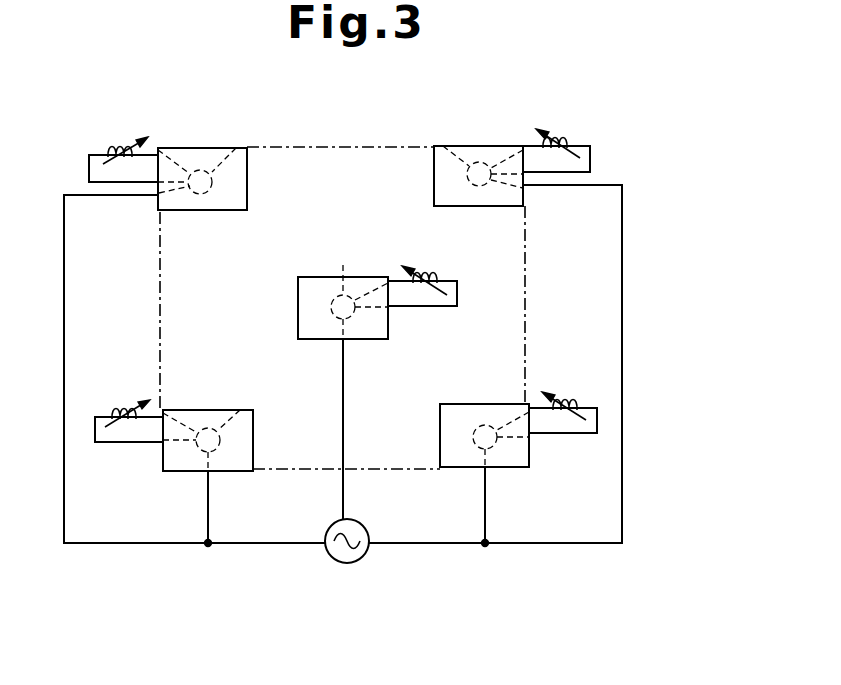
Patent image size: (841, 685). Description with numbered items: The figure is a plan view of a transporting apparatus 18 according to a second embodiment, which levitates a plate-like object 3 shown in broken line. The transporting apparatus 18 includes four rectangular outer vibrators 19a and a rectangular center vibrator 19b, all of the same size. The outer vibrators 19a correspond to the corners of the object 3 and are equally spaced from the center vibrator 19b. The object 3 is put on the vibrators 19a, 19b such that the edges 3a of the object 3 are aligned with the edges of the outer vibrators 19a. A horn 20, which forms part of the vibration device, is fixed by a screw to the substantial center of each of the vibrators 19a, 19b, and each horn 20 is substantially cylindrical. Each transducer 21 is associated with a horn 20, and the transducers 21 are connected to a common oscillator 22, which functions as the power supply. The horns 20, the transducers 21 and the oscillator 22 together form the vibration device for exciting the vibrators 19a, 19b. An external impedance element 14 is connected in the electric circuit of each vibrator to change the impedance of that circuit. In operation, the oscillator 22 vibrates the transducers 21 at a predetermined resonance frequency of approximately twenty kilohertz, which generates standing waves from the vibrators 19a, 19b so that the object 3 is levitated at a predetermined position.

The object 3 is at (354, 270).
The edges 3a is at (340, 146).
The external impedance element 14 is at (114, 150).
The transporting apparatus 18 is at (632, 263).
The outer vibrators 19a is at (176, 212).
The center vibrator 19b is at (298, 300).
The horn 20 is at (236, 148).
The transducer 21 is at (354, 276).
The oscillator 22 is at (364, 557).